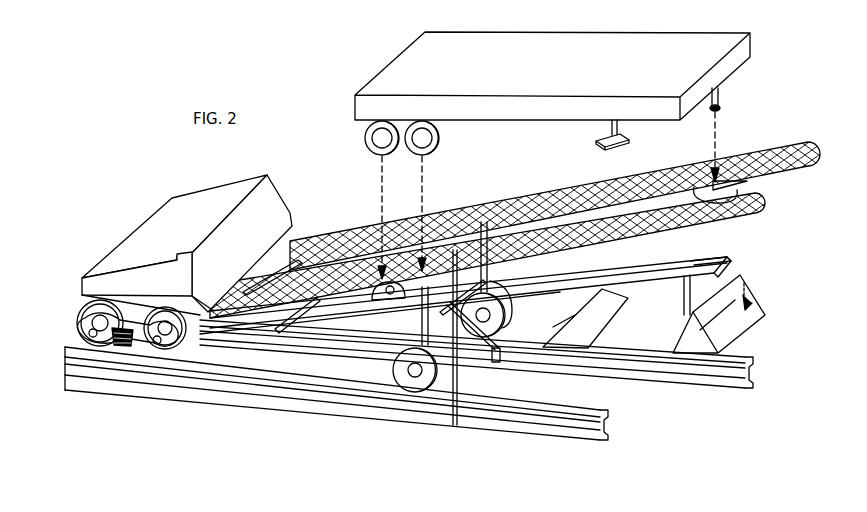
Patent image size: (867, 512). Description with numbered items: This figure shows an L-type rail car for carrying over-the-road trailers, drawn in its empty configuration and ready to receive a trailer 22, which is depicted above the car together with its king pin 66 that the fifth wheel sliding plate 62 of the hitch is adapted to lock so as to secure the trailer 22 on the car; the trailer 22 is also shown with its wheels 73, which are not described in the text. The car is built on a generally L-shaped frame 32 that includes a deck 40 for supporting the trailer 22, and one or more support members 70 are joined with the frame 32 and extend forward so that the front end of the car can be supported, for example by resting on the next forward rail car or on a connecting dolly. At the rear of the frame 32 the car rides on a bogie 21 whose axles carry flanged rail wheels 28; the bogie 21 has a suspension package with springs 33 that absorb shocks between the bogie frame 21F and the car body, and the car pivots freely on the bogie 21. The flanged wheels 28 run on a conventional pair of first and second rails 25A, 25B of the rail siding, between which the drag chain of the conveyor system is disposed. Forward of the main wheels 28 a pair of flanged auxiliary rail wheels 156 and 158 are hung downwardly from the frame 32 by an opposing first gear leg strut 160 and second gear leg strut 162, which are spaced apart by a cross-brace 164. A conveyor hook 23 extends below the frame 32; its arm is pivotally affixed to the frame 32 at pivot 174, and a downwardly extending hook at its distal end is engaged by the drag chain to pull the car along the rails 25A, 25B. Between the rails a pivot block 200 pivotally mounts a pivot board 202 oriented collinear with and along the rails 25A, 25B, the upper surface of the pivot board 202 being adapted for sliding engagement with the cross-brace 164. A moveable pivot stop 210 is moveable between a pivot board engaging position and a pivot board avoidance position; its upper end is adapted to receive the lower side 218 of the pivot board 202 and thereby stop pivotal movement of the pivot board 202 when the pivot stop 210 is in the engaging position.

The bogie 21 is at (70, 298).
The bogie frame 21F is at (68, 330).
The flanged rail wheels 28 is at (78, 327).
The springs 33 is at (119, 348).
The over-the-road trailer 22 is at (726, 67).
The king pin 66 is at (722, 98).
The roller 73 is at (365, 141).
The support members 70 is at (815, 143).
The deck 40 is at (467, 207).
The fifth wheel sliding plate 62 is at (750, 188).
The pivot 174 is at (372, 298).
The frame 32 is at (553, 263).
The pivot board 202 is at (690, 262).
The pivot block 200 is at (617, 311).
The moveable pivot stop 210 is at (743, 303).
The lower side 218 is at (684, 305).
The second gear leg strut 162 is at (507, 307).
The first gear leg strut 160 is at (405, 327).
The flanged auxiliary rail wheel 158 is at (497, 323).
The flanged auxiliary rail wheel 156 is at (408, 385).
The cross-brace 164 is at (456, 430).
The conveyor hook 23 is at (478, 350).
The first rail 25A is at (608, 425).
The second rail 25B is at (700, 378).